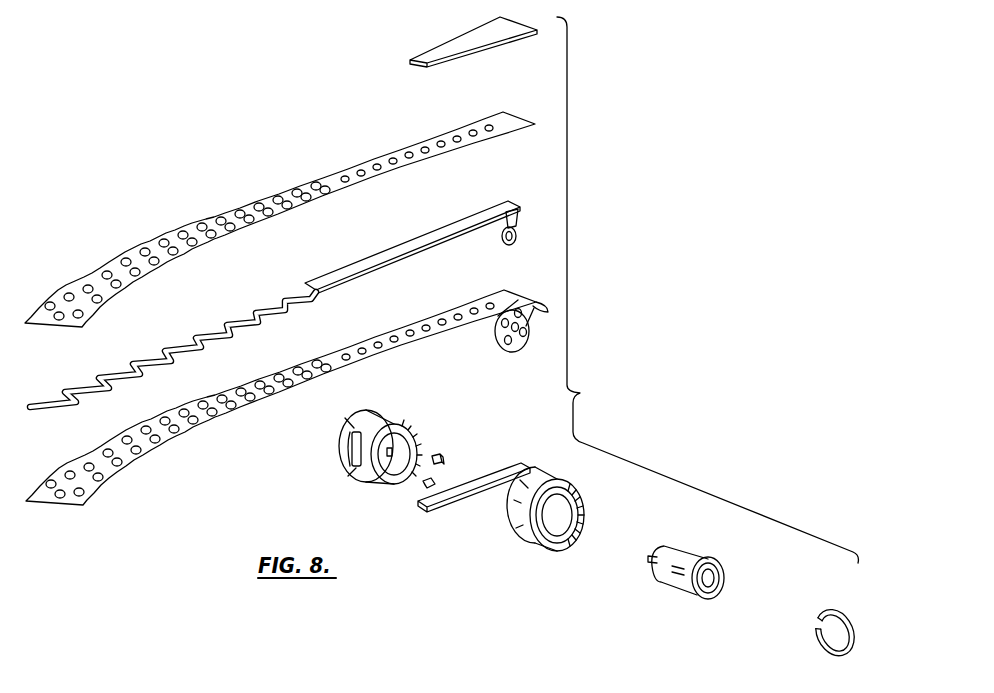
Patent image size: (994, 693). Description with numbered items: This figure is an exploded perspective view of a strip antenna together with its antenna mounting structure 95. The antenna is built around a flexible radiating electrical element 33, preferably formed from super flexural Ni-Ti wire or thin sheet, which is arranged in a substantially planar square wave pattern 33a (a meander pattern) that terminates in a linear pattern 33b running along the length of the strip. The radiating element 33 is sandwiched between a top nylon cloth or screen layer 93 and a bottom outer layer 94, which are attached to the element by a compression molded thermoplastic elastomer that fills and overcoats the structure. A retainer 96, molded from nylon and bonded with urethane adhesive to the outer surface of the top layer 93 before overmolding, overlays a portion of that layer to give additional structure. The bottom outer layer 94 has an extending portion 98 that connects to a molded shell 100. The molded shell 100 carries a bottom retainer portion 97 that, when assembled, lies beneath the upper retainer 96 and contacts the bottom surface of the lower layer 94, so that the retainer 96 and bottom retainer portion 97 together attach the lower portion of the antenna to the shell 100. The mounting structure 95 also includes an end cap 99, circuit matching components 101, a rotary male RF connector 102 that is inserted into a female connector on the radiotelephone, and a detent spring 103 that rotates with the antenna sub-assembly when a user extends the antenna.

The radiating electrical element 33 is at (275, 293).
The square wave pattern 33a is at (222, 318).
The linear pattern 33b is at (428, 240).
The top nylon layer 93 is at (380, 160).
The bottom outer layer 94 is at (338, 370).
The antenna mounting structure 95 is at (674, 452).
The retainer 96 is at (452, 47).
The bottom retainer portion 97 is at (444, 510).
The extending portion 98 is at (533, 326).
The end cap 99 is at (413, 440).
The molded shell 100 is at (563, 478).
The circuit matching components 101 is at (435, 483).
The rotary male RF connector 102 is at (703, 556).
The detent spring 103 is at (818, 645).